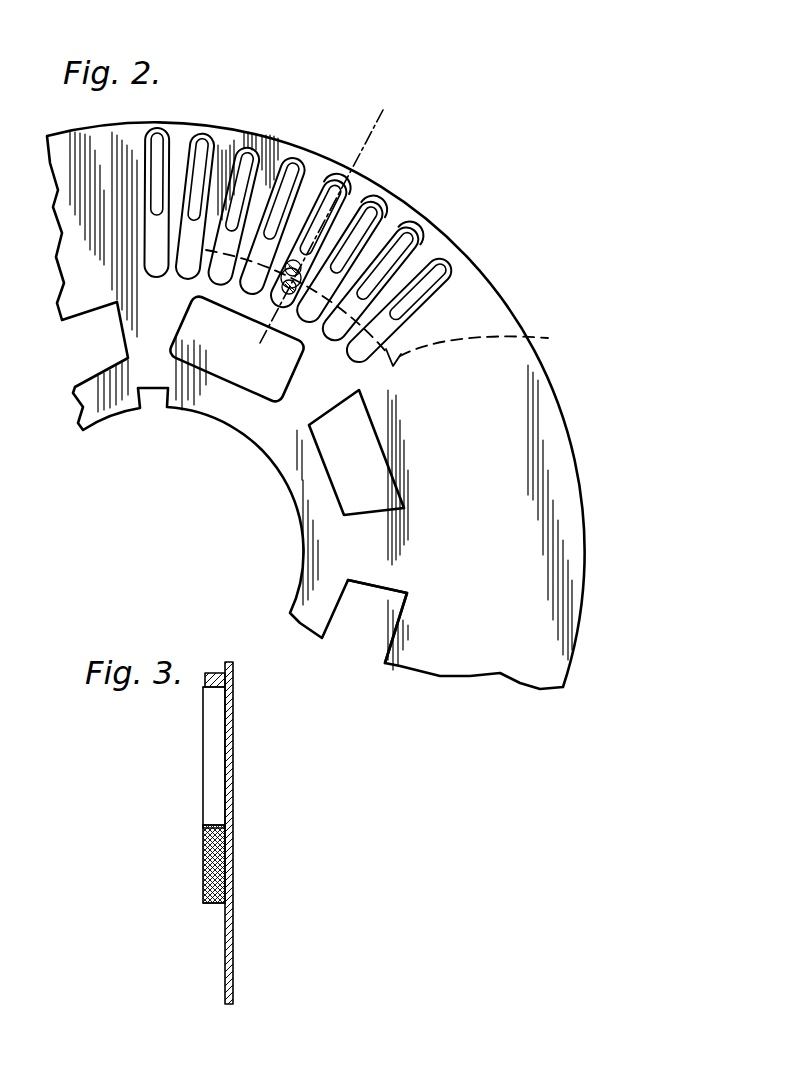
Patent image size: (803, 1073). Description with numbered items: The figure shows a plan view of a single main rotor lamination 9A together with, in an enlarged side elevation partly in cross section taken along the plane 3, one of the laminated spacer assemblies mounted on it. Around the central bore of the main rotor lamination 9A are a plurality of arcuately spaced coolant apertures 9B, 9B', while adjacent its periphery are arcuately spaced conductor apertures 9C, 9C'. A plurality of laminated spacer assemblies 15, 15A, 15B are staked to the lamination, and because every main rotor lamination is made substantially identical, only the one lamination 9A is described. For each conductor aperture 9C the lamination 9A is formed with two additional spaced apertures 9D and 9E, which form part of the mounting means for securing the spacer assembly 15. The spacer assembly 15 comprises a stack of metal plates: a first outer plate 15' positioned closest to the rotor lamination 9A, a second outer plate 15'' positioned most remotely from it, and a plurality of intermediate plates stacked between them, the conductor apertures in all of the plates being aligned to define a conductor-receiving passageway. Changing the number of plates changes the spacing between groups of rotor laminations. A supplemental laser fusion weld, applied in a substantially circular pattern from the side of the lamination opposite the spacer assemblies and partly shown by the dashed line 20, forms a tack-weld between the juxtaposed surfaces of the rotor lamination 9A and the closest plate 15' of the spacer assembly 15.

In FIG. 2, the main rotor lamination 9A is at (490, 547).
In FIG. 3, the main rotor lamination 9A is at (232, 958).
In FIG. 2, the coolant aperture 9B is at (389, 452).
In FIG. 2, the coolant aperture 9B' is at (415, 621).
In FIG. 2, the conductor aperture 9C is at (300, 230).
In FIG. 2, the conductor aperture 9C' is at (353, 227).
In FIG. 2, the aperture 9D is at (285, 295).
In FIG. 3, the aperture 9D is at (232, 853).
In FIG. 2, the aperture 9E is at (288, 263).
In FIG. 3, the aperture 9E is at (233, 892).
In FIG. 2, the laminated spacer assembly 15 is at (367, 176).
In FIG. 3, the laminated spacer assembly 15 is at (211, 727).
In FIG. 3, the first outer plate 15' is at (242, 663).
In FIG. 3, the second outer plate 15'' is at (181, 707).
In FIG. 2, the laminated spacer assembly 15A is at (393, 212).
In FIG. 2, the laminated spacer assembly 15B is at (427, 238).
In FIG. 2, the weld area 20 is at (490, 343).
In FIG. 3, the weld area 20 is at (235, 867).
In FIG. 2, the section plane 3 is at (380, 107).